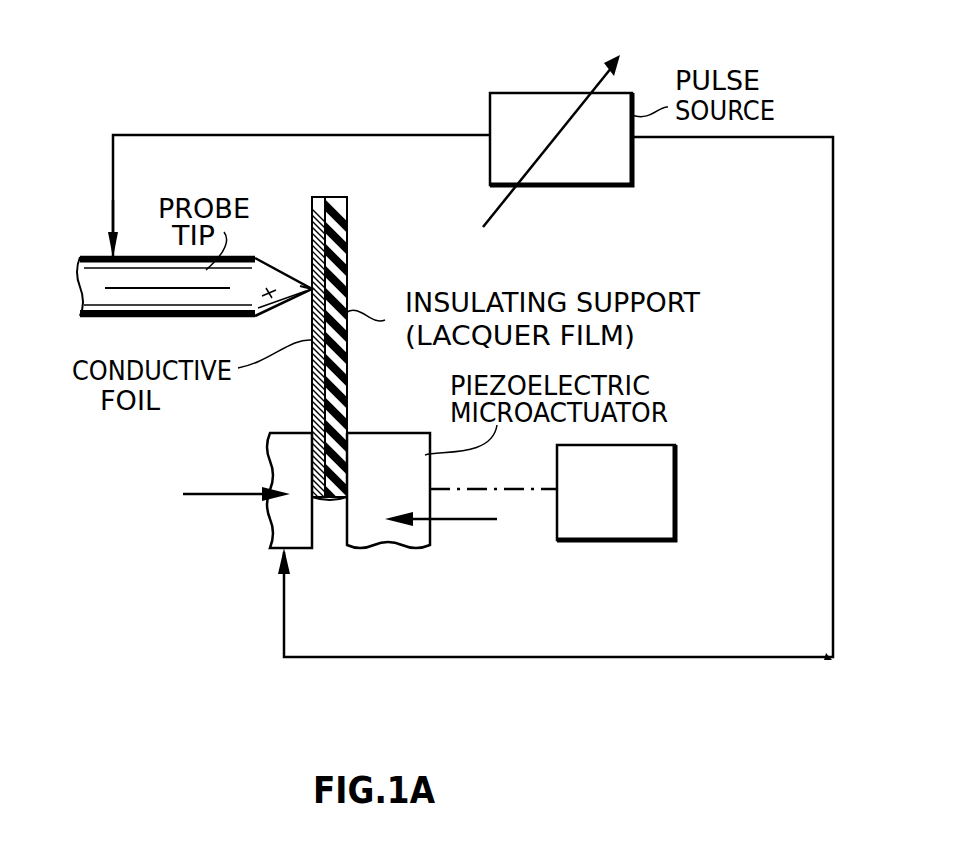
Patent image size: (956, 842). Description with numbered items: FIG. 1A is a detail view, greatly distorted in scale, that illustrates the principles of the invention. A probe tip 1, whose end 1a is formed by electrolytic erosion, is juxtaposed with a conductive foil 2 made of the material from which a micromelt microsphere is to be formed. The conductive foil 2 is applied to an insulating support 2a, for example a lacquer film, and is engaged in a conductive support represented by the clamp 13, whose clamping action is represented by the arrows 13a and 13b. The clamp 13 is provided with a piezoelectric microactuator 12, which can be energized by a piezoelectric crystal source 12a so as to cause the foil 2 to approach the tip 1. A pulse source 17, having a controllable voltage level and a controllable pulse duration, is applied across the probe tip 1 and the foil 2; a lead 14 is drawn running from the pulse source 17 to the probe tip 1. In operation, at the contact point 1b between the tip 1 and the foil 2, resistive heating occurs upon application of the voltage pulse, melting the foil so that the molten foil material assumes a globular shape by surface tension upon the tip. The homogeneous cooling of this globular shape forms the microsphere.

The probe tip 1 is at (85, 292).
The end of probe tip 1a is at (274, 296).
The contact point 1b is at (310, 289).
The conductive foil 2 is at (312, 218).
The insulating support 2a is at (336, 214).
The piezoelectric microactuator 12 is at (385, 450).
The piezoelectric crystal source 12a is at (675, 505).
The clamp 13 is at (270, 440).
The arrows 13a is at (215, 494).
The force arrow 13b is at (468, 521).
The lead wire 14 is at (110, 256).
The pulse source 17 is at (490, 102).